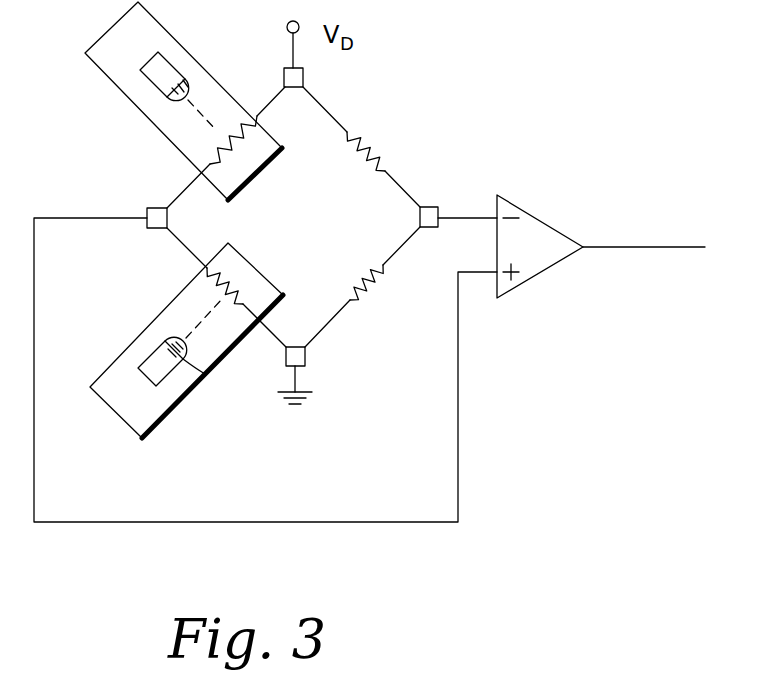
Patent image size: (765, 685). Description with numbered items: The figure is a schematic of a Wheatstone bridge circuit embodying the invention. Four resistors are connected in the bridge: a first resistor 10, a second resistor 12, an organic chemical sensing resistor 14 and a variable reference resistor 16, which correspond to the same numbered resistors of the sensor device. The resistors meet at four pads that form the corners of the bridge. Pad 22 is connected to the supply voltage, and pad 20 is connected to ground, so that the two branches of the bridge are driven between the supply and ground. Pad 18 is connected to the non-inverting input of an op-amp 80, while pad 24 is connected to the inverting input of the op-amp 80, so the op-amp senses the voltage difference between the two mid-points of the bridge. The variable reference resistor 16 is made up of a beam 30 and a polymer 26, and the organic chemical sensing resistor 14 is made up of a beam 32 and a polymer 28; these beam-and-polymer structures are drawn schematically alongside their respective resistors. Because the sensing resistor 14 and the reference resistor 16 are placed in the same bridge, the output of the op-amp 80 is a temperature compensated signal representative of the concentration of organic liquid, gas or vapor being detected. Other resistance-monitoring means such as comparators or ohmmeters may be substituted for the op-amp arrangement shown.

The resistor 10 is at (384, 140).
The resistor 12 is at (385, 293).
The organic chemical sensing resistor 14 is at (258, 165).
The variable reference resistor 16 is at (242, 268).
The pad 18 is at (147, 227).
The pad 20 is at (296, 347).
The pad 22 is at (303, 78).
The pad 24 is at (430, 207).
The polymer 26 is at (212, 367).
The polymer 28 is at (200, 64).
The beam 30 is at (158, 378).
The beam 32 is at (153, 60).
The op-amp 80 is at (538, 217).